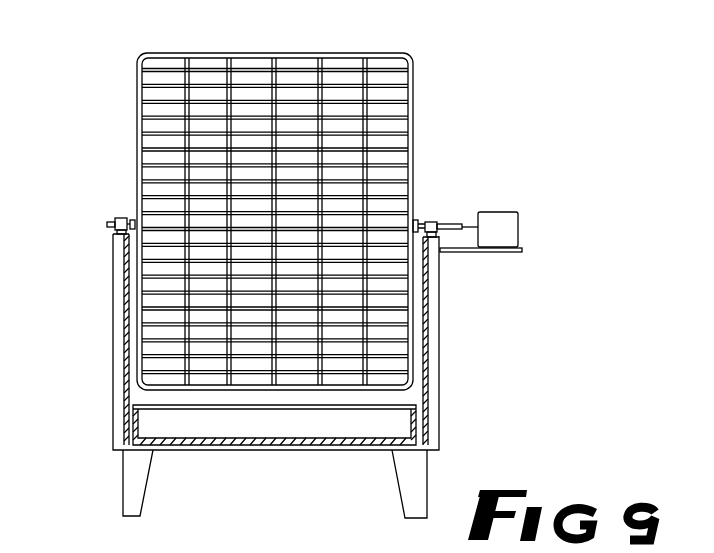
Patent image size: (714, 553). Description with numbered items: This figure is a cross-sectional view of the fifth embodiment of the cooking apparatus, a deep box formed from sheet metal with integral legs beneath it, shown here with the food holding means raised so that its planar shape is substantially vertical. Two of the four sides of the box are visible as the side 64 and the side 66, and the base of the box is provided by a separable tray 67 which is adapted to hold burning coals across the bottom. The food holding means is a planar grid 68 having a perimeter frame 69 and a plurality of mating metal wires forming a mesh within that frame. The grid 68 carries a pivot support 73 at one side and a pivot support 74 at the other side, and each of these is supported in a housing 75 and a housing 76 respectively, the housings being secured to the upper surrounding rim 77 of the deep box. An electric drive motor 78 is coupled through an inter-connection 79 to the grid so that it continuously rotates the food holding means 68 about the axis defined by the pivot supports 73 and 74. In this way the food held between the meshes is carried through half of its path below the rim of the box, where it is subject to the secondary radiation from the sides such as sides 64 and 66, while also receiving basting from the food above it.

The side 64 is at (440, 335).
The side 66 is at (124, 332).
The separable tray 67 is at (417, 420).
The planar grid 68 is at (412, 137).
The perimeter frame 69 is at (390, 55).
The pivot support 73 is at (108, 224).
The pivot support 74 is at (437, 221).
The housing 75 is at (117, 219).
The housing 76 is at (438, 232).
The upper surrounding rim 77 is at (124, 236).
The electric drive motor 78 is at (490, 217).
The inter-connection 79 is at (455, 223).